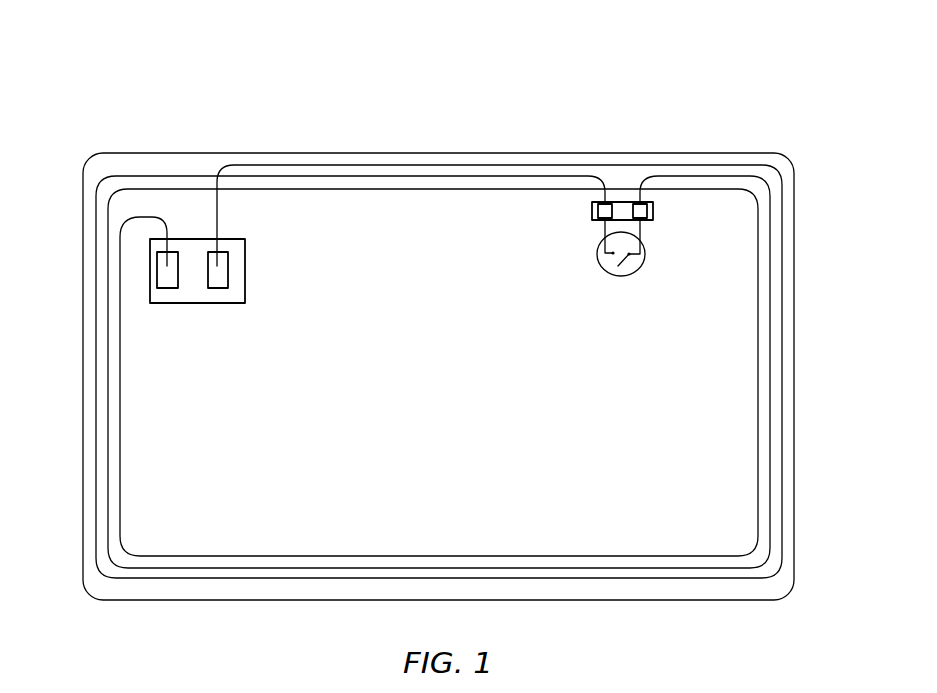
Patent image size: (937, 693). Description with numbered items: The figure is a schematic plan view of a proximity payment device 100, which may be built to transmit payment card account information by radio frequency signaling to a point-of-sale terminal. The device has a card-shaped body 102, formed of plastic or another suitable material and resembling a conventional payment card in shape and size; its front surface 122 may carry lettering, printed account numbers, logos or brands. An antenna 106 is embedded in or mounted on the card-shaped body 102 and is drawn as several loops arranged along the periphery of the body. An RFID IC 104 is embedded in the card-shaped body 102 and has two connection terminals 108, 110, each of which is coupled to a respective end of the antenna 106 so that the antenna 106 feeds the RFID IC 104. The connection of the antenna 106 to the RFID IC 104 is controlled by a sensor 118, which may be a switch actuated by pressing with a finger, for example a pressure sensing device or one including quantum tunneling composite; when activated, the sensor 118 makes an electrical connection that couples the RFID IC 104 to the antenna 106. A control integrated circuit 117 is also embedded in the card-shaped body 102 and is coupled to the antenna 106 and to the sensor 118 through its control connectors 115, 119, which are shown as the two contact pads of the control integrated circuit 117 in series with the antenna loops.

The proximity payment device 100 is at (631, 91).
The card-shaped body 102 is at (446, 218).
The RFID IC 104 is at (158, 290).
The antenna 106 is at (725, 170).
The connection terminal 108 is at (178, 285).
The connection terminal 110 is at (228, 276).
The control connector 115 is at (598, 210).
The control integrated circuit 117 is at (617, 222).
The sensor 118 is at (608, 272).
The control connector 119 is at (648, 210).
The front surface 122 is at (714, 322).